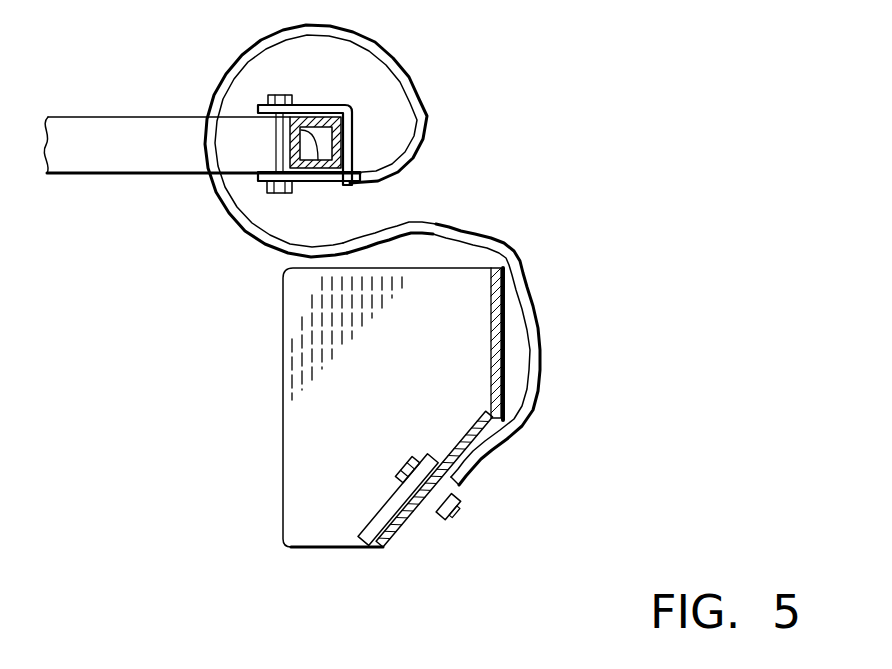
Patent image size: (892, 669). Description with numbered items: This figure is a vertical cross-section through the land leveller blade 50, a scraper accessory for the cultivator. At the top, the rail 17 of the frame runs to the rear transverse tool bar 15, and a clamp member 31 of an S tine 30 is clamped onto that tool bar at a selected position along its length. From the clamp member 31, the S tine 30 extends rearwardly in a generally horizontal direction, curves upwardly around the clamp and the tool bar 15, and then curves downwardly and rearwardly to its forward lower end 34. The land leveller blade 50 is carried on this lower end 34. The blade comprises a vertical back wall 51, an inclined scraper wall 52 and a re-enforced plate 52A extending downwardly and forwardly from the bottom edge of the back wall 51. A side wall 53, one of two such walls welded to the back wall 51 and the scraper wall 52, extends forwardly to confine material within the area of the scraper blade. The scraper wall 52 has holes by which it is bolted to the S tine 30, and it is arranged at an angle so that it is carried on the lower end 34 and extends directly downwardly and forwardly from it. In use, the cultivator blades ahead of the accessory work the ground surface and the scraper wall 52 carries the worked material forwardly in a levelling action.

The rail 17 is at (88, 122).
The clamp member 31 is at (345, 97).
The rear transverse tool bar 15 is at (318, 152).
The S tine 30 is at (481, 231).
The land leveller blade 50 is at (282, 329).
The vertical back wall 51 is at (489, 330).
The side wall 53 is at (315, 407).
The re-enforced plate 52A is at (389, 496).
The inclined scraper wall 52 is at (402, 533).
The forward lower end 34 is at (469, 483).